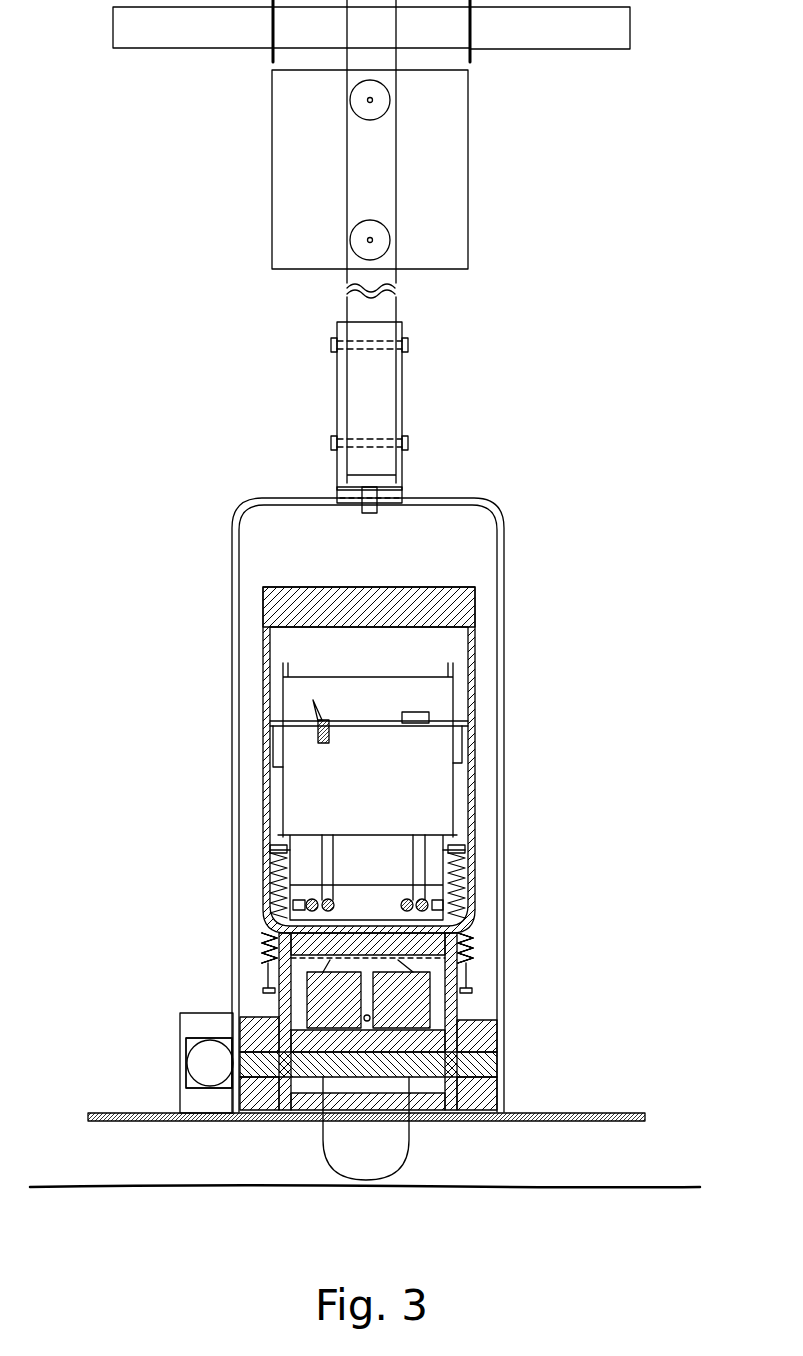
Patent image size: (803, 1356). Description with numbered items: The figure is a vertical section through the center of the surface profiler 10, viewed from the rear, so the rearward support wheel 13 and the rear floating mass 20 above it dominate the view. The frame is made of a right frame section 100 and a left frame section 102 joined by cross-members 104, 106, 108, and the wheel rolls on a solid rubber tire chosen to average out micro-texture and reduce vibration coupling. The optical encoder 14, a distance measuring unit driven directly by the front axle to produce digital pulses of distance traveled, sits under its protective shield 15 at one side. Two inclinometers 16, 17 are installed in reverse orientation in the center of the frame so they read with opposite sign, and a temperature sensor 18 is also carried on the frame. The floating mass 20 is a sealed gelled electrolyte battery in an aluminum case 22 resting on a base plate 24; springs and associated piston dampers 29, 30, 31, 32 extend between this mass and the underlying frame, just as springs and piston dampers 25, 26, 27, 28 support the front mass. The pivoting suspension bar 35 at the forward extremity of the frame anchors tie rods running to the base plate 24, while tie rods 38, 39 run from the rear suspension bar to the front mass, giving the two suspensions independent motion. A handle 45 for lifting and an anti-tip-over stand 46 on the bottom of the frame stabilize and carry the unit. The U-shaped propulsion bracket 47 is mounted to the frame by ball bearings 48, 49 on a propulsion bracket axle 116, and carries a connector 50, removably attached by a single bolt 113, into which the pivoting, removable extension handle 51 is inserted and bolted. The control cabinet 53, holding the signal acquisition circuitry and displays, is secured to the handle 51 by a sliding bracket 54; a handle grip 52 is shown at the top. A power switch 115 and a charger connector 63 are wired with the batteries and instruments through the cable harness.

The surface profiler 10 is at (600, 355).
The rearward support wheel 13 is at (362, 1135).
The optical encoder 14 is at (192, 1025).
The shield 15 is at (209, 1063).
The inclinometer 16 is at (300, 1005).
The inclinometer 17 is at (417, 993).
The temperature sensor 18 is at (368, 1018).
The floating mass 20 is at (425, 777).
The aluminum case 22 is at (453, 697).
The base plate 24 is at (458, 857).
The spring and piston damper 25 is at (473, 963).
The spring and piston damper 26 is at (465, 948).
The spring and piston damper 27 is at (265, 962).
The spring and piston damper 28 is at (269, 948).
The spring and piston damper 29 is at (465, 948).
The spring and piston damper 30 is at (465, 948).
The spring and piston damper 31 is at (269, 948).
The spring and piston damper 32 is at (269, 948).
The pivoting suspension bar 35 is at (382, 900).
The tie rod 38 is at (423, 843).
The tie rod 39 is at (323, 862).
The handle 45 is at (278, 610).
The anti-tip-over stand 46 is at (130, 1122).
The U-shaped propulsion bracket 47 is at (232, 823).
The ball bearing 48 is at (250, 1121).
The ball bearing 49 is at (488, 1123).
The connector 50 is at (338, 408).
The extension handle 51 is at (358, 303).
The handle bar 52 is at (235, 27).
The control cabinet 53 is at (320, 197).
The sliding bracket 54 is at (367, 203).
The charger connector 63 is at (430, 712).
The right frame section 100 is at (453, 1117).
The left frame section 102 is at (277, 1113).
The cross-member 104 is at (475, 945).
The cross-member 106 is at (497, 1042).
The cross-member 108 is at (428, 1117).
The bolt 113 is at (360, 516).
The power switch 115 is at (320, 722).
The propulsion bracket axle 116 is at (312, 1113).